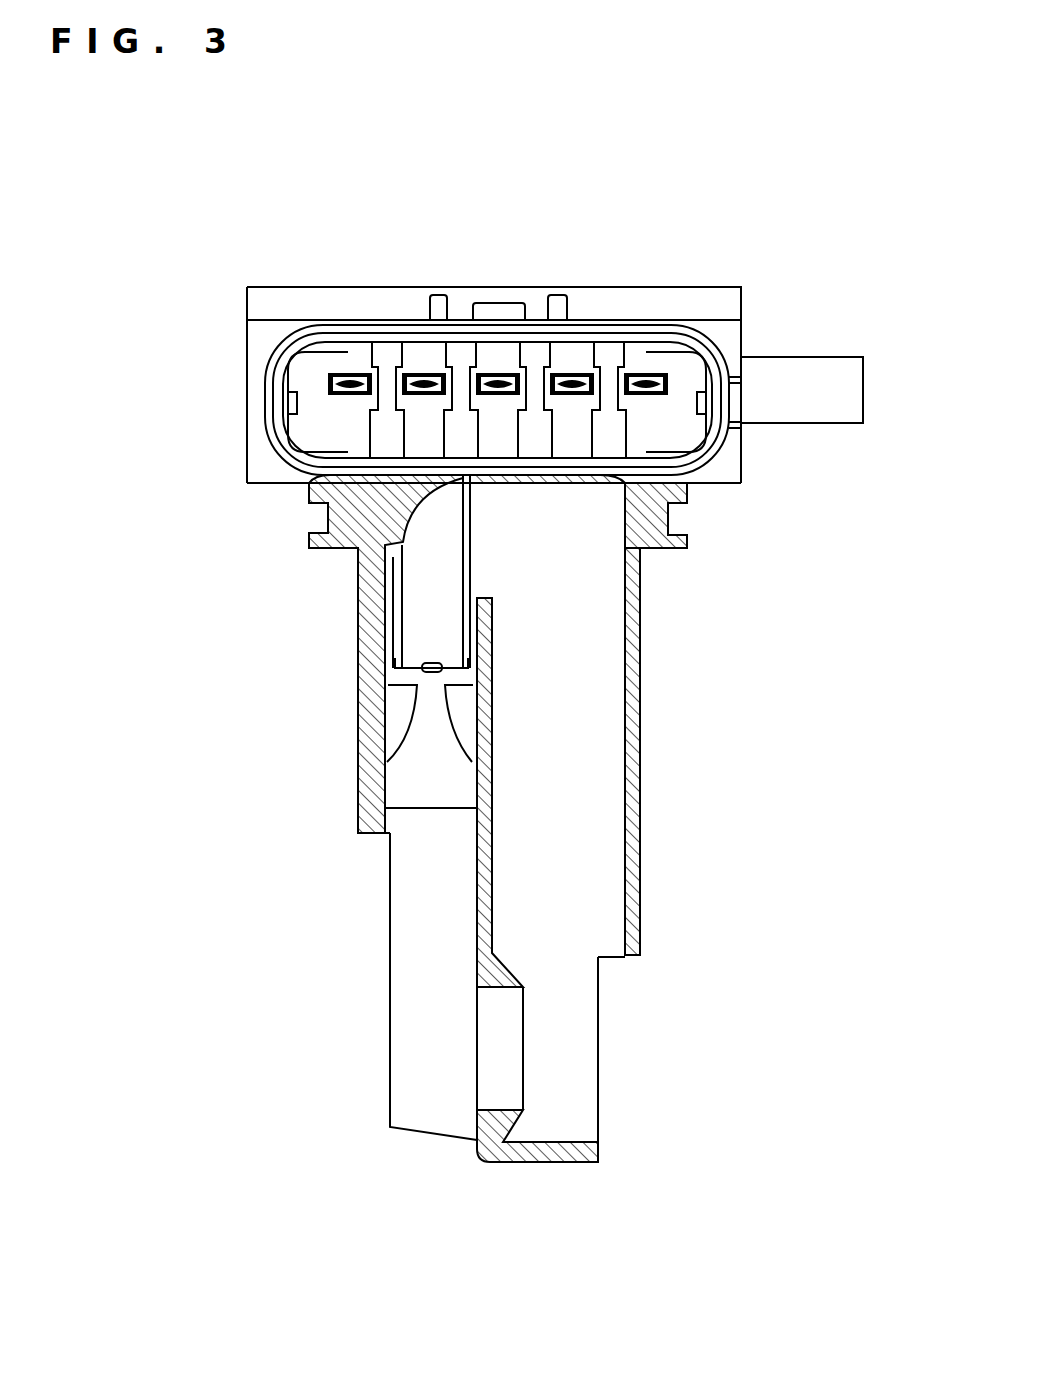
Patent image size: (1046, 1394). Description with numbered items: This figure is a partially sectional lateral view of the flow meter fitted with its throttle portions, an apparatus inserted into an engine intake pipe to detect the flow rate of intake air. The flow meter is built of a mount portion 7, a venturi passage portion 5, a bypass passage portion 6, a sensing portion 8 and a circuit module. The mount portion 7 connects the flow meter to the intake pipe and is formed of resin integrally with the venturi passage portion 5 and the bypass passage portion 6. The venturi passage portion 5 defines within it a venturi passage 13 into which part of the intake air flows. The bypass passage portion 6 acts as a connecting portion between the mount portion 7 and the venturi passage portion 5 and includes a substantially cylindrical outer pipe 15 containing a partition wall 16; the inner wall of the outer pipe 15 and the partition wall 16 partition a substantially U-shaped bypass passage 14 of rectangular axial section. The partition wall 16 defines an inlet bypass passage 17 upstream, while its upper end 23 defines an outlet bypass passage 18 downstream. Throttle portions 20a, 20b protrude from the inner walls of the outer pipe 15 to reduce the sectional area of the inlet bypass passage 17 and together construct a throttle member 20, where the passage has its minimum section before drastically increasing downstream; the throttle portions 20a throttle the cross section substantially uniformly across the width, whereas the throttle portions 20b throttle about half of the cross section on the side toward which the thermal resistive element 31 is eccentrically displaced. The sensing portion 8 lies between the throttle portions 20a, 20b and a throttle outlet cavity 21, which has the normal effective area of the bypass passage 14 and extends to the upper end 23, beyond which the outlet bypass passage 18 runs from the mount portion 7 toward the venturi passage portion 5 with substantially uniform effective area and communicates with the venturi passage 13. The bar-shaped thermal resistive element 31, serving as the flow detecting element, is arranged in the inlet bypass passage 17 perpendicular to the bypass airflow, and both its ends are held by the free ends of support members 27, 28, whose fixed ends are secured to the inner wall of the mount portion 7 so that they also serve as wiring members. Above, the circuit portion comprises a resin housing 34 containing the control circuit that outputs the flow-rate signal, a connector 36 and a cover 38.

The venturi passage portion 5 is at (426, 953).
The bypass passage portion 6 is at (457, 732).
The mount portion 7 is at (645, 517).
The sensing portion 8 is at (196, 689).
The venturi passage 13 is at (497, 1107).
The bypass passage 14 is at (589, 884).
The outer pipe 15 is at (637, 570).
The partition wall 16 is at (492, 708).
The inlet bypass passage 17 is at (439, 834).
The outlet bypass passage 18 is at (575, 780).
The throttle member 20 is at (355, 814).
The throttle portion 20a is at (425, 738).
The throttle portion 20b is at (398, 718).
The throttle outlet cavity 21 is at (422, 565).
The upper end 23 is at (485, 587).
The support member 27 is at (425, 672).
The support member 28 is at (396, 625).
The thermal resistive element 31 is at (395, 712).
The housing 34 is at (247, 343).
The connector 36 is at (283, 325).
The cover 38 is at (657, 305).